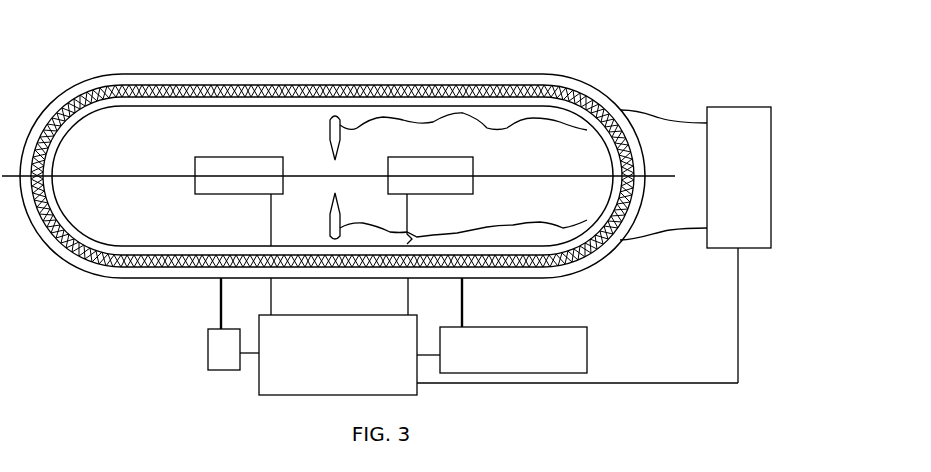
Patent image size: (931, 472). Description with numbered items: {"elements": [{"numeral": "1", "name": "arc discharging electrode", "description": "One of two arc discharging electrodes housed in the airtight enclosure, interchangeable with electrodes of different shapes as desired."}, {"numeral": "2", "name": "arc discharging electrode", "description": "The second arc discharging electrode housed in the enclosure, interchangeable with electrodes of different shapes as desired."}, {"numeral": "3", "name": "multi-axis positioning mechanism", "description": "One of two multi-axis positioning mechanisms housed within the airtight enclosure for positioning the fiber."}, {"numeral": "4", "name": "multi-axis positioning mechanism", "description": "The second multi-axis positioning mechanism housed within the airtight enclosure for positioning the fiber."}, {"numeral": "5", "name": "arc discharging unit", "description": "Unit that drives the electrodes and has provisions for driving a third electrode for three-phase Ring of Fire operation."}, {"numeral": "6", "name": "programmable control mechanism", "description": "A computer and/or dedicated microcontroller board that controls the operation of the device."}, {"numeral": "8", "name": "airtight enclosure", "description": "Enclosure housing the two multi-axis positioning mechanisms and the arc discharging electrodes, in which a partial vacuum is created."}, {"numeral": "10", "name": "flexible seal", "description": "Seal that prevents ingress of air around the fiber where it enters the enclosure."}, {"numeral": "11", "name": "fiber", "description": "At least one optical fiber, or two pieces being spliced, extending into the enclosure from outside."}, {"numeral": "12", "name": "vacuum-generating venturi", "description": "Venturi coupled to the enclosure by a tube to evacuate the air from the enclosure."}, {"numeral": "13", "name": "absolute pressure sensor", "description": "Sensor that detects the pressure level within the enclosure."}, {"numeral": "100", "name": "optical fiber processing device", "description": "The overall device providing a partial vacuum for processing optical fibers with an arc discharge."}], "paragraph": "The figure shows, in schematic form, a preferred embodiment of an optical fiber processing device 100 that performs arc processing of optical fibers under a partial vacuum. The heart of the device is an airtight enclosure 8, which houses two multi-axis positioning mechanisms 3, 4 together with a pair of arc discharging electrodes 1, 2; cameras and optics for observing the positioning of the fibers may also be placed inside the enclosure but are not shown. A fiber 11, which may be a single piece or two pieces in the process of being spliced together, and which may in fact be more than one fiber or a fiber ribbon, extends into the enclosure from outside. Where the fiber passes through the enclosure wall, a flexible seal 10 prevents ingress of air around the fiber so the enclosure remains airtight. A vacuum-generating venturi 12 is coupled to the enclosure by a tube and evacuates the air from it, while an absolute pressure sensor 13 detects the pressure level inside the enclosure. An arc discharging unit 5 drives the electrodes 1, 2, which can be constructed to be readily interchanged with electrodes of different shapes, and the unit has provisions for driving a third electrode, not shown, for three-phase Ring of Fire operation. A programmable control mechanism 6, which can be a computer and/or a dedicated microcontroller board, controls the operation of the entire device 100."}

The first electrode 1 is at (325, 138).
The second electrode 2 is at (326, 216).
The first sensor unit 3 is at (239, 201).
The second sensor unit 4 is at (430, 200).
The gas supply unit 5 is at (695, 245).
The controller 6 is at (498, 336).
The housing 8 is at (238, 74).
The insulating layer 10 is at (368, 86).
The chamber 11 is at (332, 176).
The power supply 12 is at (502, 325).
The display 13 is at (233, 324).
The apparatus 100 is at (653, 44).